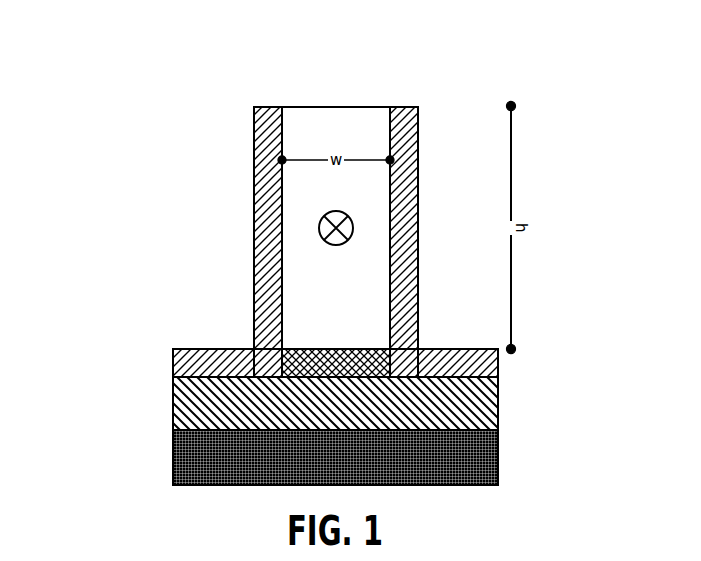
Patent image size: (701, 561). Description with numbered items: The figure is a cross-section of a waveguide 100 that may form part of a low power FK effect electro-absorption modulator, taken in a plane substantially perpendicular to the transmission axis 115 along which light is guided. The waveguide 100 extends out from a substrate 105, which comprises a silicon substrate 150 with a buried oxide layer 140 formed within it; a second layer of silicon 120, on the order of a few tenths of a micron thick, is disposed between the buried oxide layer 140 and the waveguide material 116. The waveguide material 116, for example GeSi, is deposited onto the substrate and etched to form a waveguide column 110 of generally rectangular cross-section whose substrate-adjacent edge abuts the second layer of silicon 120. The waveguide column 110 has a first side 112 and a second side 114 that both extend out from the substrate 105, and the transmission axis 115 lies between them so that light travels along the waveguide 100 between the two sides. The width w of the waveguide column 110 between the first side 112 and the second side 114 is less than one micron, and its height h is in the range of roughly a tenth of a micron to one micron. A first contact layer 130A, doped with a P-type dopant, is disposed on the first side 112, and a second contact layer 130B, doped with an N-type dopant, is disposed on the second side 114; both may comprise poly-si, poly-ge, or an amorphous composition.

The waveguide 100 is at (509, 28).
The substrate 105 is at (119, 418).
The waveguide column 110 is at (336, 86).
The first side 112 is at (317, 228).
The second side 114 is at (356, 228).
The transmission axis 115 is at (363, 208).
The waveguide material 116 is at (361, 212).
The second layer of silicon 120 is at (336, 343).
The first contact layer 130A is at (227, 242).
The second contact layer 130B is at (444, 242).
The buried oxide layer 140 is at (371, 397).
The silicon substrate 150 is at (371, 453).